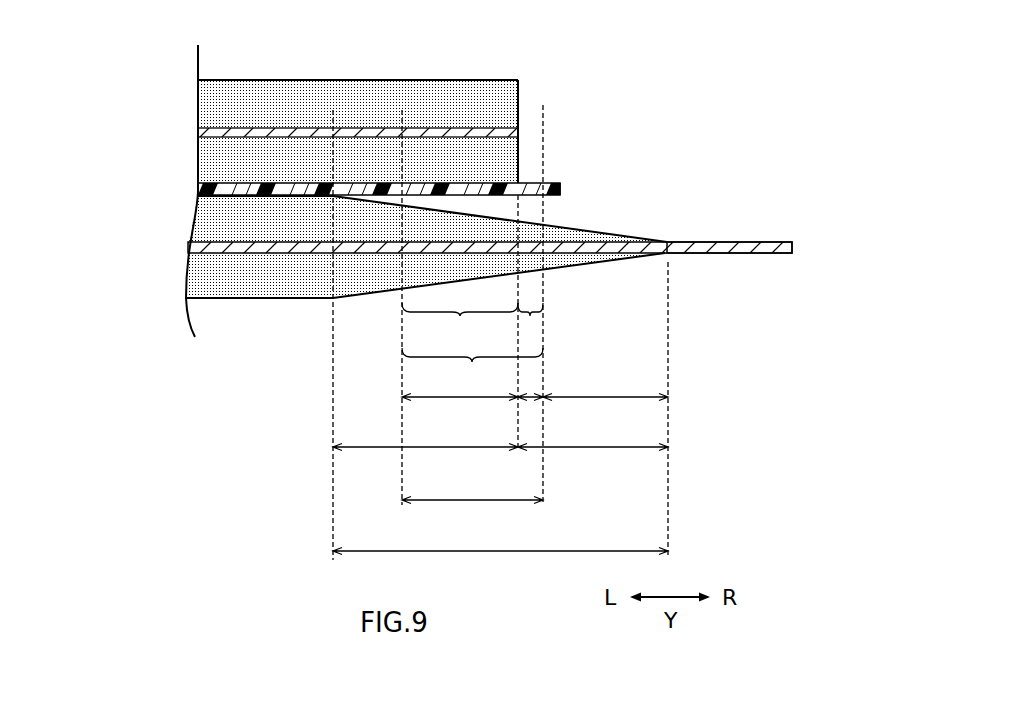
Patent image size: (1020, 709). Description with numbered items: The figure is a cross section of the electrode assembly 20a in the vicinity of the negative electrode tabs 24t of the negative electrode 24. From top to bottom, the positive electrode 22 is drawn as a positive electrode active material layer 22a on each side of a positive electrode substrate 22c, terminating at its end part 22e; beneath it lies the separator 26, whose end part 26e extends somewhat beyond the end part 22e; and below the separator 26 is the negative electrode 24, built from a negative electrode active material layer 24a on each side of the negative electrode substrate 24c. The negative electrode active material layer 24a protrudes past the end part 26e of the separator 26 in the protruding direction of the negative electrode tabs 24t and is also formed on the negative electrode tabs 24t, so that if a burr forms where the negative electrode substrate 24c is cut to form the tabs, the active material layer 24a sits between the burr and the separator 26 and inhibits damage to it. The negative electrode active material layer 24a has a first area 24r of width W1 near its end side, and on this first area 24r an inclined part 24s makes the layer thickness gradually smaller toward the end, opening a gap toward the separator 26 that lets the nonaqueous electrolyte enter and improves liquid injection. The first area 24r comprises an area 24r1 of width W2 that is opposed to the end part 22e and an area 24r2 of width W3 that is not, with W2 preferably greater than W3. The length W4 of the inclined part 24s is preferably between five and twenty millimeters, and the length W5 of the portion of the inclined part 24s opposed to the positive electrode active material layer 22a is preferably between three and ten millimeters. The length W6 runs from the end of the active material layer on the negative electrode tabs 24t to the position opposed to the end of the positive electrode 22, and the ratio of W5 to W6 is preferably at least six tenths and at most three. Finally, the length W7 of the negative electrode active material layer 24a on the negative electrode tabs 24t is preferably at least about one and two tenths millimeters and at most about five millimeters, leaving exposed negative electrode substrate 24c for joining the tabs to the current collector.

The electrode assembly 20a is at (634, 62).
The positive electrode 22 is at (117, 98).
The positive electrode active material layer 22a is at (203, 115).
The first intermediate layer 22c is at (203, 133).
The end part of the positive electrode 22e is at (520, 110).
The negative electrode 24 is at (117, 213).
The negative electrode active material layer 24a is at (197, 221).
The negative electrode substrate 24c is at (190, 248).
The inclined part 24s is at (497, 216).
The negative electrode tabs 24t is at (748, 256).
The first area 24r is at (472, 368).
The area opposed to the end part of the positive electrode 24r1 is at (460, 323).
The area not opposed to the end part of the positive electrode 24r2 is at (531, 316).
The separator 26 is at (200, 193).
The end part of the separator 26e is at (560, 189).
The width of the first area W1 is at (472, 513).
The width of the area opposed to the end part of the positive electrode W2 is at (460, 410).
The width of the area not opposed to the end part of the positive electrode W3 is at (527, 399).
The length of the inclined part W4 is at (500, 565).
The length of the area opposed to the positive electrode active material layer at th W5 is at (425, 462).
The length from the end side of the active material layer on the tabs to the positio W6 is at (593, 462).
The length of the negative electrode active material layer on the negative electrode W7 is at (606, 395).